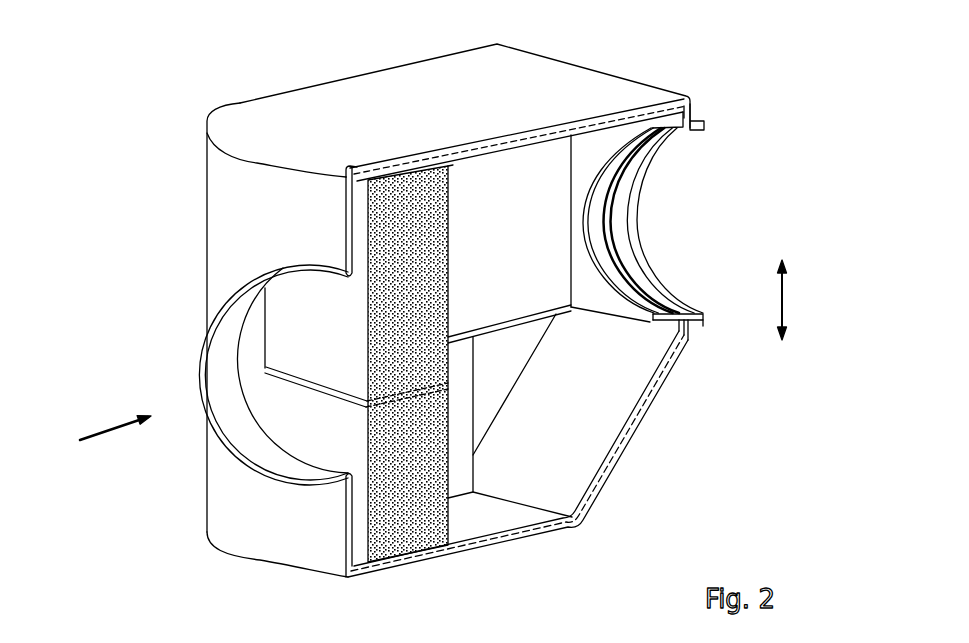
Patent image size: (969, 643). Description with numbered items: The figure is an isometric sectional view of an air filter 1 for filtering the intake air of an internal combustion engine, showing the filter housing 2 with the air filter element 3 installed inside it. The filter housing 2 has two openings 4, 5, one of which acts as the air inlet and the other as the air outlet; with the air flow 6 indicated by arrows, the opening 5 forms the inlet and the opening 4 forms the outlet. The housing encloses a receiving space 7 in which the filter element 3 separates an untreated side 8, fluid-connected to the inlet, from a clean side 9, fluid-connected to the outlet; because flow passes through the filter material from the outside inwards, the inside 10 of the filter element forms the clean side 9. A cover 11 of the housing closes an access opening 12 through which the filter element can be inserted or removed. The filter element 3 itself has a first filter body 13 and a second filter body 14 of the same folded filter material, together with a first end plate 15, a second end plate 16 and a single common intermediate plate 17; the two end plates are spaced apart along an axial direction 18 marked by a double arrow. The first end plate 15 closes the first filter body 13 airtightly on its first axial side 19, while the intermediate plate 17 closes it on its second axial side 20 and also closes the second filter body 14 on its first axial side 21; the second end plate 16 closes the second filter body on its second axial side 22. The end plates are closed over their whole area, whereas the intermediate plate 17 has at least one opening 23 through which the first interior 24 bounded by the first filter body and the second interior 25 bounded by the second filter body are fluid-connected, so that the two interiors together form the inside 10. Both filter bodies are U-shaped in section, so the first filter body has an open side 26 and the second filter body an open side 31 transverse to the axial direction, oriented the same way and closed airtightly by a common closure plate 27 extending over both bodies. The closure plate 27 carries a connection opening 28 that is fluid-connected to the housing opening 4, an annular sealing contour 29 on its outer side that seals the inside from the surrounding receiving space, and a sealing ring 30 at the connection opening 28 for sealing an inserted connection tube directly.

The air filter 1 is at (778, 212).
The filter housing 2 is at (204, 232).
The air filter element 3 is at (258, 333).
The opening 4 is at (630, 207).
The opening 5 is at (245, 428).
The air flow 6 is at (108, 425).
The receiving space 7 is at (278, 536).
The untreated side 8 is at (358, 513).
The clean side 9 is at (519, 221).
The inside 10 is at (522, 229).
The cover 11 is at (240, 113).
The access opening 12 is at (457, 152).
The first filter body 13 is at (310, 346).
The second filter body 14 is at (310, 442).
The first end plate 15 is at (495, 147).
The second end plate 16 is at (512, 554).
The intermediate plate 17 is at (312, 395).
The axial direction 18 is at (783, 298).
The first axial side 19 is at (408, 172).
The second axial side 20 is at (557, 318).
The first axial side 21 is at (508, 323).
The second axial side 22 is at (468, 558).
The opening 23 is at (603, 312).
The first interior 24 is at (551, 191).
The second interior 25 is at (546, 437).
The open side 26 is at (573, 157).
The closure plate 27 is at (611, 325).
The connection opening 28 is at (628, 312).
The annular sealing contour 29 is at (693, 103).
The sealing ring 30 is at (691, 328).
The open side 31 is at (475, 480).